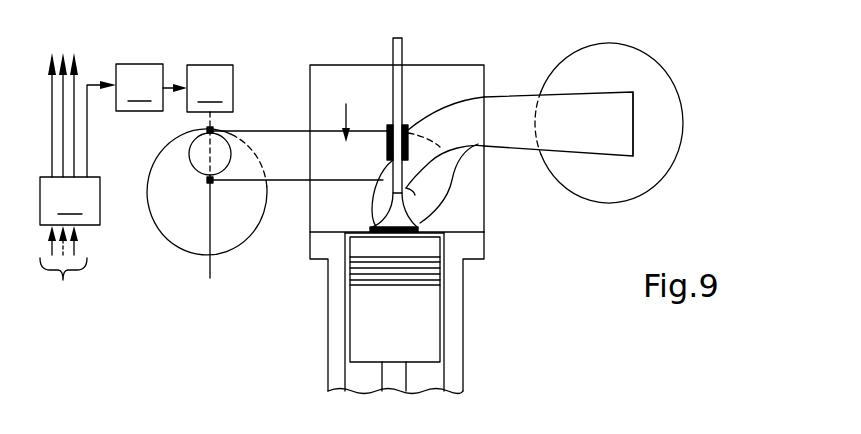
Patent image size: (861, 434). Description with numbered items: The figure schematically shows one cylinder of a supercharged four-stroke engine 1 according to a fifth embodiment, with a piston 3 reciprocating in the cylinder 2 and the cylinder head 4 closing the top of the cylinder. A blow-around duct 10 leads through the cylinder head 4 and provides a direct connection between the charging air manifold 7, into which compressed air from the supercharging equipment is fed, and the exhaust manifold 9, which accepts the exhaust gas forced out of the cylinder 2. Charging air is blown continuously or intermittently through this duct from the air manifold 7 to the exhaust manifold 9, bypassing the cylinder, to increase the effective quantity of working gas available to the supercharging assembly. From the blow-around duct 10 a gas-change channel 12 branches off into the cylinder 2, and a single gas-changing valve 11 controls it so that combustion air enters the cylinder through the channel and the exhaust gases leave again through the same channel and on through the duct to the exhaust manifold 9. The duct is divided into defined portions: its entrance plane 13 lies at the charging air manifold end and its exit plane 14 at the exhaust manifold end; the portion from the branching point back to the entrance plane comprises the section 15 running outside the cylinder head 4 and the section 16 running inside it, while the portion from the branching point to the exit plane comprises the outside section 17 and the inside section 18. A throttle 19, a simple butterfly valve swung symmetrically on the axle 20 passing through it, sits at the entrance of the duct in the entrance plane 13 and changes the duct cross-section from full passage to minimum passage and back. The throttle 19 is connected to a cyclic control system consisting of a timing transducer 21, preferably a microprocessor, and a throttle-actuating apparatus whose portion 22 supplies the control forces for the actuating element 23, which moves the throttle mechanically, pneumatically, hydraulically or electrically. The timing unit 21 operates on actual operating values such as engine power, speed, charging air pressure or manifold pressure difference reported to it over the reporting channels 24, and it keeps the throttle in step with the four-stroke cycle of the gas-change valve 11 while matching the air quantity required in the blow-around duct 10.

The engine 1 is at (313, 370).
The cylinder 2 is at (452, 372).
The piston 3 is at (423, 329).
The cylinder head 4 is at (312, 65).
The charging air manifold 7 is at (173, 228).
The exhaust manifold 9 is at (655, 163).
The blow-around duct 10 is at (343, 110).
The gas-changing valve 11 is at (395, 224).
The gas-change channel 12 is at (374, 212).
The entrance plane 13 is at (206, 164).
The exit plane 14 is at (633, 125).
The duct section outside cylinder head 15 is at (294, 150).
The duct section inside cylinder head 16 is at (330, 143).
The duct section outside cylinder head 17 is at (508, 108).
The duct section inside cylinder head 18 is at (466, 117).
The throttle 19 is at (191, 148).
The axle 20 is at (207, 245).
The timing transducer 21 is at (78, 139).
The throttle-actuating apparatus portion 22 is at (151, 87).
The actuating element 23 is at (210, 88).
The reporting channels 24 is at (63, 268).